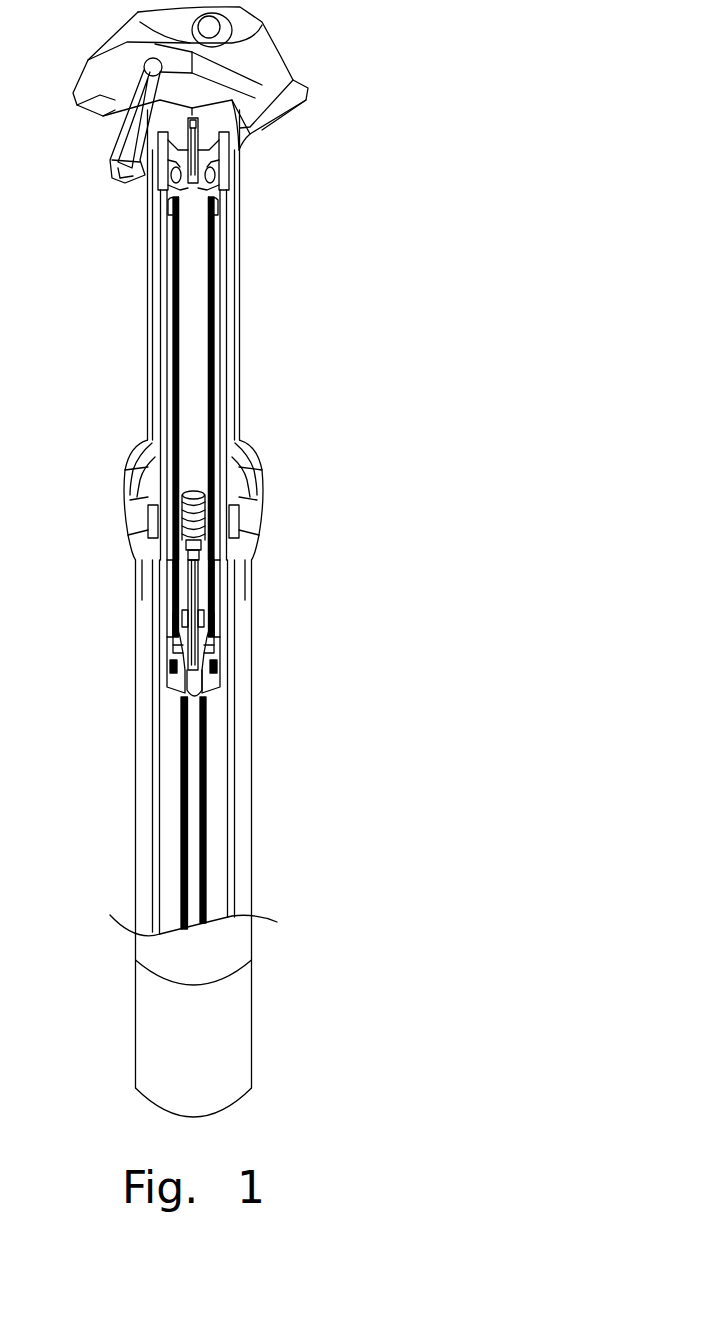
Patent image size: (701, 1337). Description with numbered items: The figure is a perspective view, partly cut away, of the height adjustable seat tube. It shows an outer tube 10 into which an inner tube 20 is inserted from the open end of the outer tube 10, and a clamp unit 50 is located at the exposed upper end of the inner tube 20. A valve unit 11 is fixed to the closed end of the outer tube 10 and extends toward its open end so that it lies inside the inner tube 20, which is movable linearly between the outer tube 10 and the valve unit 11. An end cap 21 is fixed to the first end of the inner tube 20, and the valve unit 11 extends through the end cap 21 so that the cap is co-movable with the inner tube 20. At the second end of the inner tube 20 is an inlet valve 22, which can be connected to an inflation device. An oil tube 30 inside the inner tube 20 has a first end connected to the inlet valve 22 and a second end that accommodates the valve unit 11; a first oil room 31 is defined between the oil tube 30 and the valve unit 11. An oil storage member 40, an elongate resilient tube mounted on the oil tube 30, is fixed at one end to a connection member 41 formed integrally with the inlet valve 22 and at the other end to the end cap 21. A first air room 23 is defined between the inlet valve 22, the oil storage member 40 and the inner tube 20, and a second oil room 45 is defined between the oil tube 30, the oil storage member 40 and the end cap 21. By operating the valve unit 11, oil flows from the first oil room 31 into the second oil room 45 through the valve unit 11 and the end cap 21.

The outer tube 10 is at (265, 791).
The valve unit 11 is at (187, 520).
The inner tube 20 is at (254, 302).
The end cap 21 is at (173, 670).
The inlet valve 22 is at (177, 163).
The first air room 23 is at (168, 305).
The oil tube 30 is at (222, 422).
The first oil room 31 is at (187, 382).
The oil storage member 40 is at (222, 378).
The connection member 41 is at (167, 212).
The second oil room 45 is at (173, 630).
The clamp unit 50 is at (320, 51).